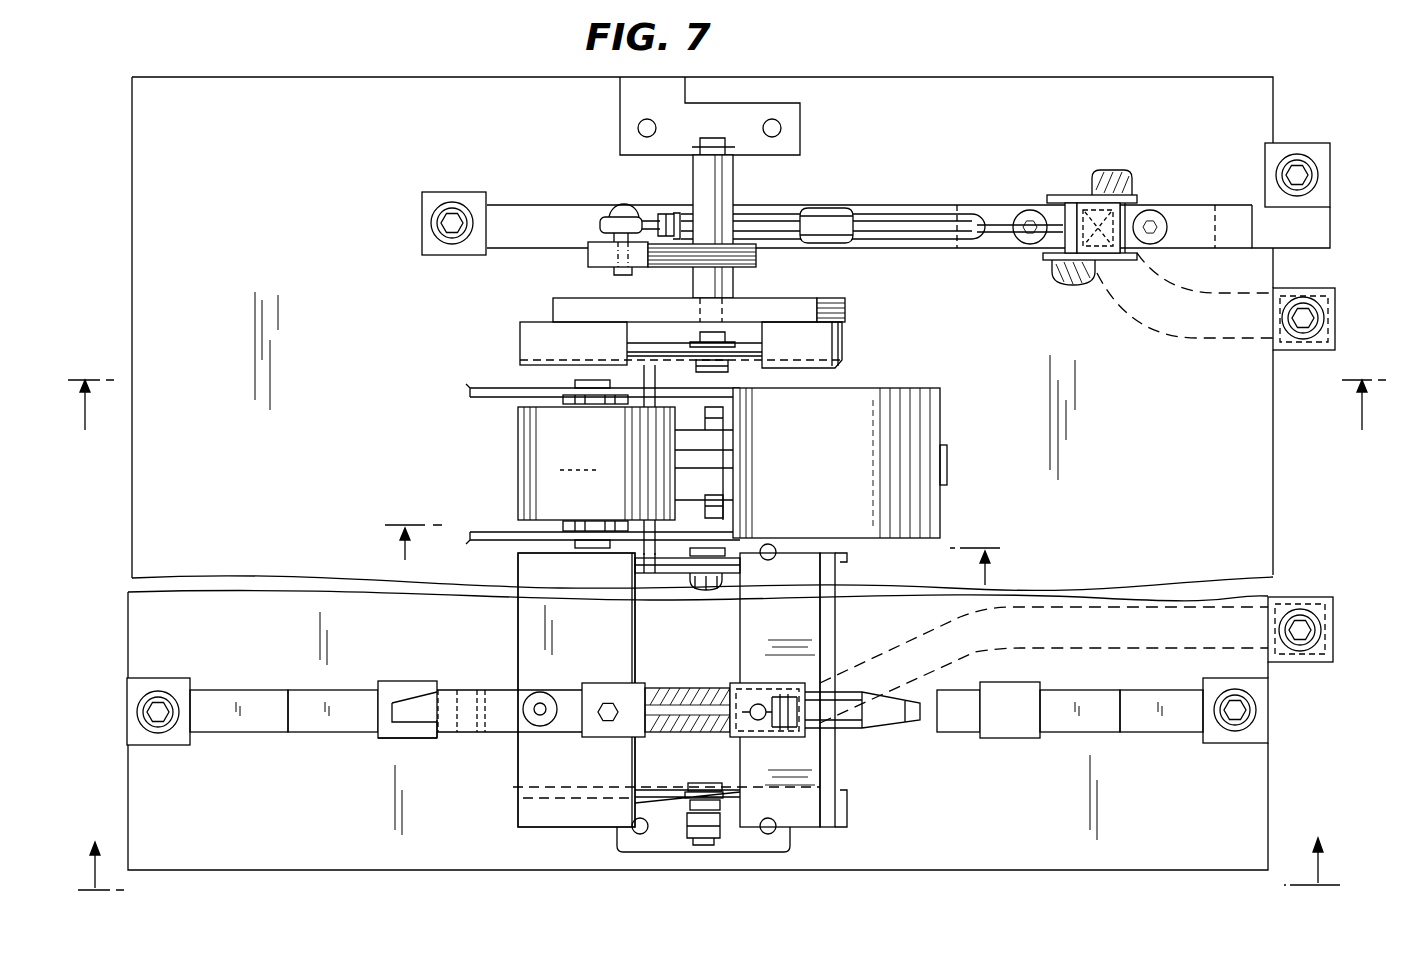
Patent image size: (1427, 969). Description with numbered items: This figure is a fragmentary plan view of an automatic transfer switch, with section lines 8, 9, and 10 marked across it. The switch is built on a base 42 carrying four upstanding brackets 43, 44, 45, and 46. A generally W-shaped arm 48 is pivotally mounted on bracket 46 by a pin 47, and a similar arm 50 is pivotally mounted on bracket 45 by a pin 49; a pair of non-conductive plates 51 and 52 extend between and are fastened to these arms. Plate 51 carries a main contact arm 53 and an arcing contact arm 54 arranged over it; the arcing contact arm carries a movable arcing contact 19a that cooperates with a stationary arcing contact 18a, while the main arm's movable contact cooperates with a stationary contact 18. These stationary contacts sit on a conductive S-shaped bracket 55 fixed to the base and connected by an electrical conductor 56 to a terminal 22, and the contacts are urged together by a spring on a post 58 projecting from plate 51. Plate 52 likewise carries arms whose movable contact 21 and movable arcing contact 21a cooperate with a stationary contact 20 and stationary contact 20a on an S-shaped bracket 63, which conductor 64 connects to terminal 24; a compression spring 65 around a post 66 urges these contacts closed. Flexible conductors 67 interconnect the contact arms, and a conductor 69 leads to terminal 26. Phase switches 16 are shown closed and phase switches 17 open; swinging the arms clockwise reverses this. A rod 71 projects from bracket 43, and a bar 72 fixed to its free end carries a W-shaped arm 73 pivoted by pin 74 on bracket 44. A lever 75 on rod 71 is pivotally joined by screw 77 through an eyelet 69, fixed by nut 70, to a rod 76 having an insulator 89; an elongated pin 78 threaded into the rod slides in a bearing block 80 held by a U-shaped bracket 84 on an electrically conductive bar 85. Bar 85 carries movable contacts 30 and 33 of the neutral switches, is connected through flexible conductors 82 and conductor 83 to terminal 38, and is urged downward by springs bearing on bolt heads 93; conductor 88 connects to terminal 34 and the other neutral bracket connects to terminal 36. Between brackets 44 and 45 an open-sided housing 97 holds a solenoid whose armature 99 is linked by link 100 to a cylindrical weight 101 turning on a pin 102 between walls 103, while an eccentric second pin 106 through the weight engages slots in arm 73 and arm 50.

The base 42 is at (318, 92).
The bracket 43 is at (797, 118).
The terminal 34 is at (430, 190).
The conductor 88 is at (515, 212).
The screw 77 is at (632, 202).
The eyelet / conductor 69 is at (598, 223).
The nut 70 is at (664, 214).
The rod 71 is at (728, 190).
The insulator 89 is at (832, 212).
The rod 76 is at (874, 215).
The movable contact 30 is at (953, 202).
The elongated pin 78 is at (994, 224).
The U-shaped bracket 84 is at (1066, 200).
The bearing block 80 is at (1087, 208).
The flexible conductors 82 is at (1120, 172).
The head 93 is at (1156, 214).
The electrically conductive bar 85 is at (1200, 210).
The movable contact 33 is at (1232, 212).
The terminal 36 is at (1332, 170).
The terminal 38 is at (1336, 305).
The conductor 83 is at (1178, 332).
The lever 75 is at (596, 260).
The bracket 44 is at (748, 342).
The bar 72 is at (795, 306).
The W-shaped arm 73 is at (825, 348).
The pin 74 is at (726, 370).
The second pin 106 is at (627, 372).
The walls 103 is at (472, 392).
The open-sided housing 97 is at (905, 396).
The cylindrical weight 101 is at (522, 462).
The pin 102 is at (594, 406).
The armature 99 is at (737, 446).
The link 100 is at (737, 471).
The terminal 26 is at (1335, 628).
The non-conductive plate 51 is at (530, 634).
The non-conductive plate 52 is at (832, 622).
The bracket 45 is at (658, 576).
The pin 49 is at (700, 570).
The arm 50 is at (735, 565).
The post 66 is at (762, 702).
The compression spring 65 is at (782, 700).
The electrical conductor 56 is at (224, 700).
The S-shaped bracket 55 is at (345, 700).
The phase switches 16 is at (446, 672).
The stationary contact 18 is at (447, 700).
The arcing contact arm 54 is at (502, 700).
The post 58 is at (552, 705).
The flexible conductors 67 is at (672, 696).
The terminal 22 is at (132, 728).
The stationary arcing contact 18a is at (396, 736).
The movable arcing contact 19a is at (420, 720).
The main contact arm 53 is at (497, 730).
The W-shaped arm 48 is at (662, 790).
The movable contact 21 is at (870, 730).
The movable arcing contact 21a is at (902, 722).
The phase switches 17 is at (905, 760).
The stationary contact 20 is at (962, 735).
The stationary contact 20a is at (1005, 740).
The S-shaped bracket 63 is at (1068, 720).
The conductor 64 is at (1160, 722).
The terminal 24 is at (1265, 708).
The bracket 46 is at (668, 848).
The pin 47 is at (705, 848).
The section line 8- 8 is at (709, 884).
The section line 9- 9 is at (699, 556).
The section line 10- 10 is at (724, 421).